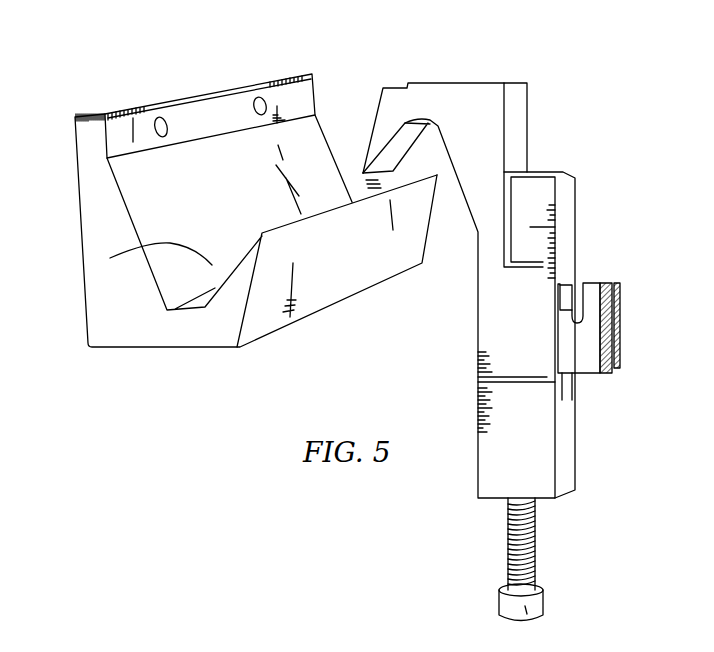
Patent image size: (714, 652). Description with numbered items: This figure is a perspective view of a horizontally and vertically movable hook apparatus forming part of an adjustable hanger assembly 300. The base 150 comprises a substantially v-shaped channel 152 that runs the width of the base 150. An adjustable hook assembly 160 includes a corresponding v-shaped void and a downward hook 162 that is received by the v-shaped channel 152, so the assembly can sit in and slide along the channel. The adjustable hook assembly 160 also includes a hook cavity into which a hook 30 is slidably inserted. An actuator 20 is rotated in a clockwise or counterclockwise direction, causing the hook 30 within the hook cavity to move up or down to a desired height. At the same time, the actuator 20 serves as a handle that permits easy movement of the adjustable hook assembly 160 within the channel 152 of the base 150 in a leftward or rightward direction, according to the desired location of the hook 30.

The adjustable hanger assembly 300 is at (525, 34).
The base 150 is at (117, 323).
The v-shaped channel 152 is at (110, 258).
The adjustable hook assembly 160 is at (528, 130).
The downward hook 162 is at (373, 120).
The hook 30 is at (613, 330).
The actuator 20 is at (535, 545).